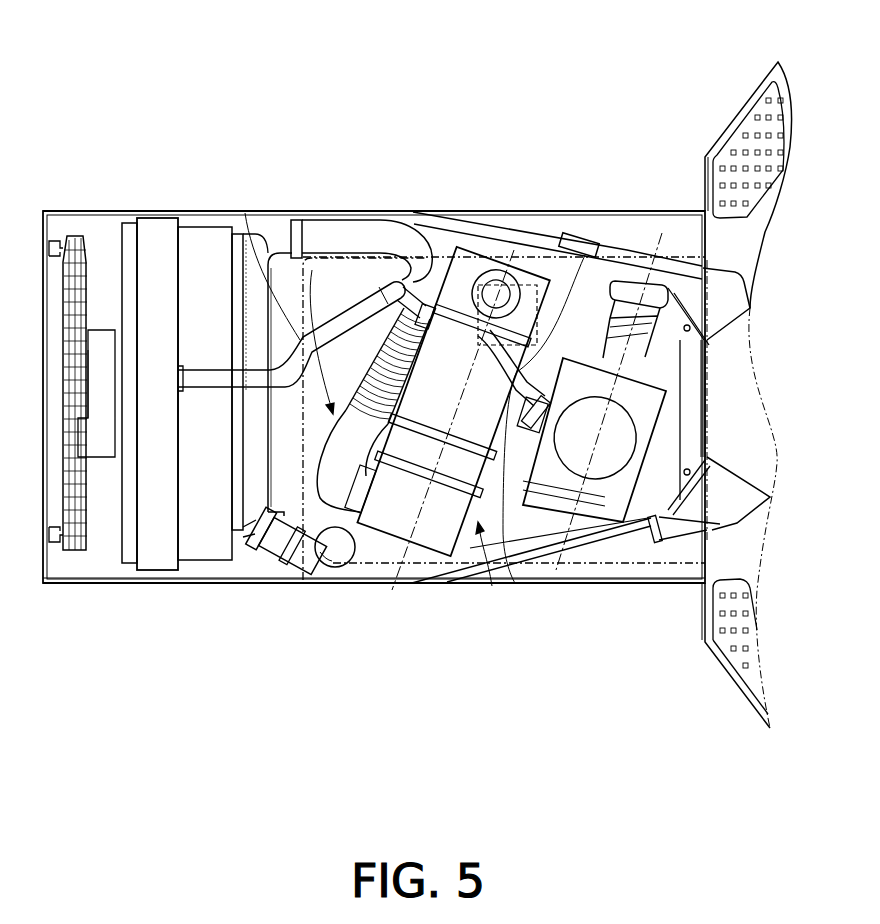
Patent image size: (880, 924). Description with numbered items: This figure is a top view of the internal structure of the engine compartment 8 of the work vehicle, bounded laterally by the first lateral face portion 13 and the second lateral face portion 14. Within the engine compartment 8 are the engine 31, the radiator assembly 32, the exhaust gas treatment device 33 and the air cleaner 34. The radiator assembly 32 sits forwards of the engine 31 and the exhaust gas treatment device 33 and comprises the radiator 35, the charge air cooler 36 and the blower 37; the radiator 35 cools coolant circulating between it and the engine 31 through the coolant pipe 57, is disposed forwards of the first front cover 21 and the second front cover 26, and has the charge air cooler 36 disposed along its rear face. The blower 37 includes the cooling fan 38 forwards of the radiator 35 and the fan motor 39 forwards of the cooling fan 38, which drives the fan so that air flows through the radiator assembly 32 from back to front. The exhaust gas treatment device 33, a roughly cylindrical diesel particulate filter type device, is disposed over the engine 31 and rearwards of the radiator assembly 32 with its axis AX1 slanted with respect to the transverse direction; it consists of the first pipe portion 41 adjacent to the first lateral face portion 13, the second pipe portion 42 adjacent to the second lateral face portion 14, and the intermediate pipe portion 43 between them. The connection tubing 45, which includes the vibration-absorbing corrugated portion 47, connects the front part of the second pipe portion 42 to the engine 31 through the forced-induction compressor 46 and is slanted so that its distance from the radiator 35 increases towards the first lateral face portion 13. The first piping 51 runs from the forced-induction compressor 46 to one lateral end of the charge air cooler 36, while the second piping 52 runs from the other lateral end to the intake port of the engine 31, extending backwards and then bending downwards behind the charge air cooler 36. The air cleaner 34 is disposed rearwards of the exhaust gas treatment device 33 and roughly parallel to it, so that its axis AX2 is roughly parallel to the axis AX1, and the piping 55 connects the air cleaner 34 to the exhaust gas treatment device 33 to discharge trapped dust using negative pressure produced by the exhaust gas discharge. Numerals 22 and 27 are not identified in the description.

The engine compartment 8 is at (165, 200).
The first lateral face portion 13 is at (405, 203).
The second lateral face portion 14 is at (292, 597).
The first front cover 21 is at (318, 210).
The support bar 22 is at (490, 225).
The second front cover 26 is at (323, 584).
The rear plate 27 is at (588, 583).
The engine 31 is at (368, 283).
The radiator assembly 32 is at (203, 212).
The exhaust gas treatment device 33 is at (487, 583).
The air cleaner 34 is at (628, 583).
The radiator 35 is at (152, 555).
The charge air cooler 36 is at (250, 583).
The blower 37 is at (128, 126).
The cooling fan 38 is at (118, 315).
The fan motor 39 is at (97, 345).
The first pipe portion 41 is at (476, 262).
The second pipe portion 42 is at (443, 547).
The intermediate pipe portion 43 is at (527, 530).
The connection tubing 45 is at (246, 212).
The forced-induction compressor 46 is at (534, 283).
The corrugated portion 47 is at (388, 372).
The first piping 51 is at (362, 243).
The second piping 52 is at (357, 583).
The piping 55 is at (565, 236).
The coolant pipe 57 is at (205, 387).
The axis of the exhaust gas treatment device AX1 is at (390, 592).
The axis of the air cleaner AX2 is at (652, 220).